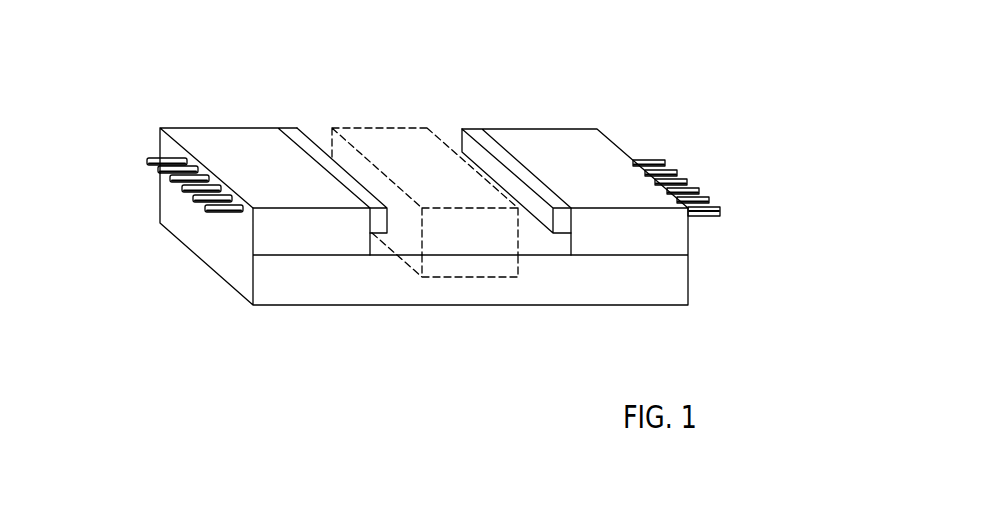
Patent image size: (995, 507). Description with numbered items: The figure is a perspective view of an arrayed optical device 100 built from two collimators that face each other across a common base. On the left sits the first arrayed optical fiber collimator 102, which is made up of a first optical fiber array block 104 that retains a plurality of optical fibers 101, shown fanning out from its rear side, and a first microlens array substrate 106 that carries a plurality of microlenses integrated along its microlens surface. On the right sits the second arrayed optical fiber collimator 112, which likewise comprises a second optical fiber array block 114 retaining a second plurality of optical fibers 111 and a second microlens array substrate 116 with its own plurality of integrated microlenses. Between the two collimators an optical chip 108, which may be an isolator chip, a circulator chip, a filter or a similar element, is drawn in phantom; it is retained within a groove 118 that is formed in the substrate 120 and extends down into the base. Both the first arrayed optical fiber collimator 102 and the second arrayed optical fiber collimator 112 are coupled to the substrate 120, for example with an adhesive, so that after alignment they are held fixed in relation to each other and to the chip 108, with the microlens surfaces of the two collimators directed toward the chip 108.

The arrayed optical device 100 is at (583, 62).
The optical fibers 101 is at (172, 178).
The first arrayed optical fiber collimator 102 is at (162, 119).
The first optical fiber array block 104 is at (265, 248).
The first microlens array substrate 106 is at (376, 224).
The optical chip 108 is at (332, 120).
The second plurality of optical fibers 111 is at (665, 164).
The second arrayed optical fiber collimator 112 is at (597, 119).
The second optical fiber array block 114 is at (680, 243).
The second microlens array substrate 116 is at (562, 223).
The groove 118 is at (512, 280).
The substrate 120 is at (443, 306).